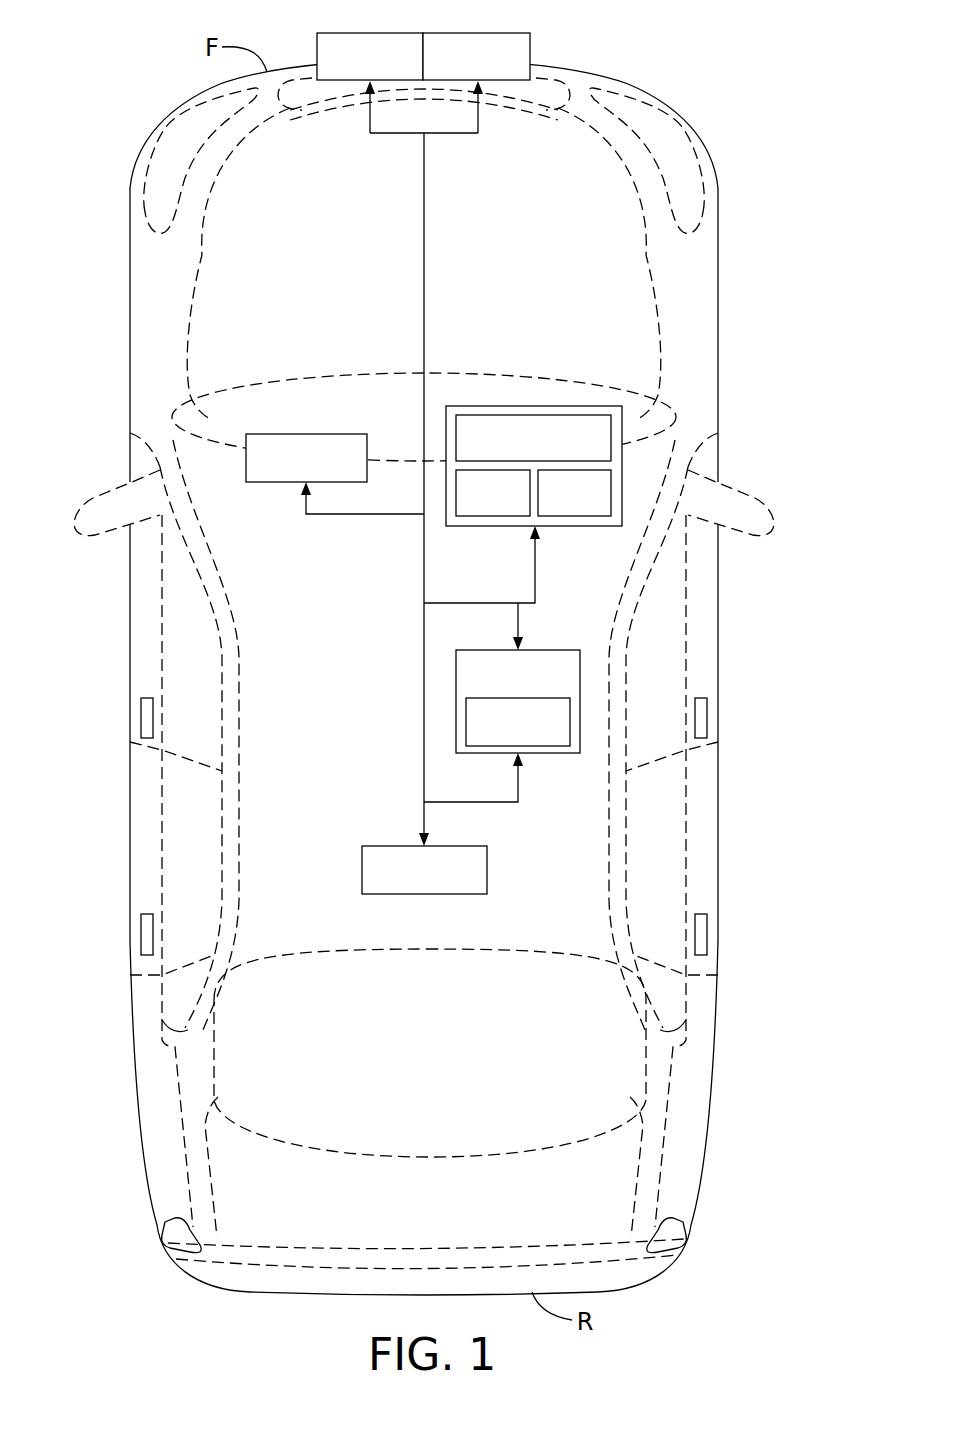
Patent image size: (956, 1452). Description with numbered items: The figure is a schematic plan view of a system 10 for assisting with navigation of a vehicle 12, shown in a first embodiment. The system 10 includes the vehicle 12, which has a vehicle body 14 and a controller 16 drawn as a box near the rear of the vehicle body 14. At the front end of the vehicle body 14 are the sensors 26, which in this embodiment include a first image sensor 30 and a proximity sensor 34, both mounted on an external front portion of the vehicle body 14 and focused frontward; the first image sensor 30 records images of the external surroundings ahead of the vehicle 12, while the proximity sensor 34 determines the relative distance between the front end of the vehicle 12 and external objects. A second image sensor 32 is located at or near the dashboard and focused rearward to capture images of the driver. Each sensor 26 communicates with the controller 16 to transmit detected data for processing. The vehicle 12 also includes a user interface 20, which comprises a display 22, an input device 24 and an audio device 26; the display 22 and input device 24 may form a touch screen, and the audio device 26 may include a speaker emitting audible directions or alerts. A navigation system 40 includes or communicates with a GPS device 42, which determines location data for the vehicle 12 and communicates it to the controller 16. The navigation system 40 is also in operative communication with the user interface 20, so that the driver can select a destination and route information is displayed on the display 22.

The system 10 is at (439, 676).
The vehicle 12 is at (126, 827).
The vehicle body 14 is at (722, 827).
The controller 16 is at (410, 884).
The user interface 20 is at (553, 406).
The display 22 is at (519, 452).
The input device 24 is at (479, 507).
The sensor 26 is at (560, 507).
The first image sensor 30 is at (356, 72).
The second image sensor 32 is at (292, 472).
The proximity sensor 34 is at (464, 72).
The navigation system 40 is at (504, 689).
The GPS device 42 is at (504, 735).